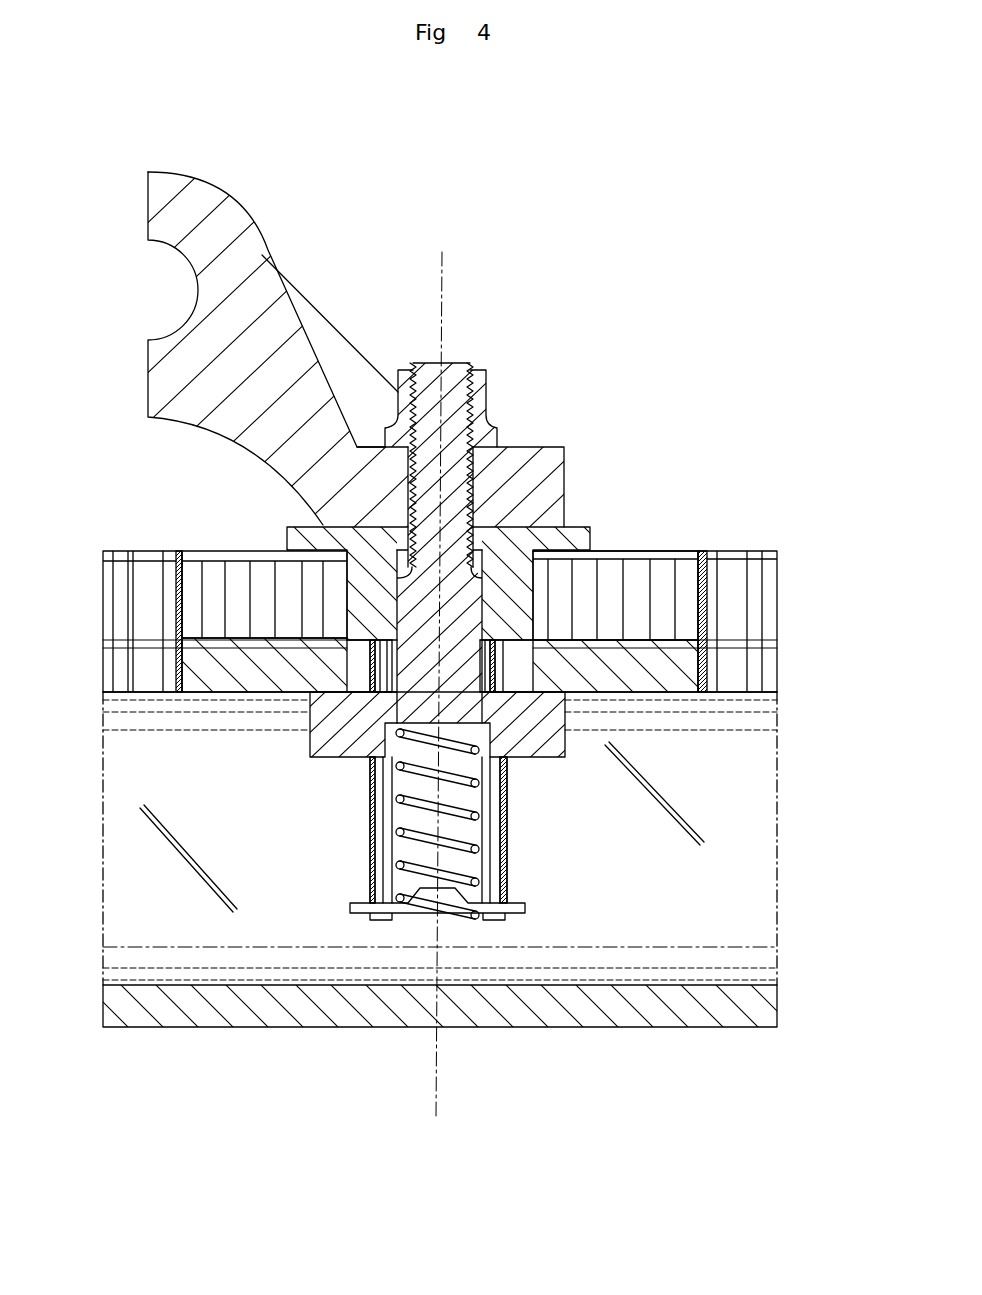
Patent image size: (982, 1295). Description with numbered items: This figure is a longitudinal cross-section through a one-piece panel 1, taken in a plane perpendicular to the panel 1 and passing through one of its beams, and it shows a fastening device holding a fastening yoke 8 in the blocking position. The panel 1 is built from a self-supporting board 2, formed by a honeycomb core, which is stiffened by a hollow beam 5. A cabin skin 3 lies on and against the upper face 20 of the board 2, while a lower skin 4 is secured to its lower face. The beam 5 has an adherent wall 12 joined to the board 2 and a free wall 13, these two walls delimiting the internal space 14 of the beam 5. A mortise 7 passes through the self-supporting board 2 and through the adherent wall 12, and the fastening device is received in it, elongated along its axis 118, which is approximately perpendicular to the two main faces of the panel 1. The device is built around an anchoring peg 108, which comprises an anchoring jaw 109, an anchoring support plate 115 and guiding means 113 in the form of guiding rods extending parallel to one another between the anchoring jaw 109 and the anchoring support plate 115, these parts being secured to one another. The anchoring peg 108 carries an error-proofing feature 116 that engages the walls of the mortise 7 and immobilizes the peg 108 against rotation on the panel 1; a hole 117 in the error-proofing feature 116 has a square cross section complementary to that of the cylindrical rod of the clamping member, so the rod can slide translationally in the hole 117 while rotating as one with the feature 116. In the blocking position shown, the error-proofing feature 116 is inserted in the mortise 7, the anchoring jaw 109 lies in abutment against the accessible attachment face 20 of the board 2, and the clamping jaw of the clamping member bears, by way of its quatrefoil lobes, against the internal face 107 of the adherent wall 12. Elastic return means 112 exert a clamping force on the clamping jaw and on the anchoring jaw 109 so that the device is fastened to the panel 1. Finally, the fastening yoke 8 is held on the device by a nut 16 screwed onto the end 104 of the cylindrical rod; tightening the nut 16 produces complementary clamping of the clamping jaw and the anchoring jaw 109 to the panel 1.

The panel 1 is at (713, 517).
The self-supporting board 2 is at (235, 598).
The cabin skin 3 is at (713, 548).
The lower skin 4 is at (210, 650).
The beam 5 is at (65, 656).
The mortise 7 is at (119, 597).
The fastening yoke 8 is at (225, 215).
The adherent wall 12 is at (278, 672).
The free wall 13 is at (230, 1008).
The internal space 14 is at (178, 922).
The nut 16 is at (477, 450).
The fastening face 20 is at (673, 550).
The end of the cylindrical rod 104 is at (442, 363).
The internal face of the adherent wall 107 is at (647, 675).
The anchoring peg 108 is at (716, 357).
The anchoring jaw 109 is at (573, 518).
The elastic return means 112 is at (385, 808).
The guiding means 113 is at (375, 802).
The anchoring support plate 115 is at (513, 923).
The error-proofing feature 116 is at (500, 580).
The hole 117 is at (473, 555).
The axis of elongation 118 is at (440, 1070).